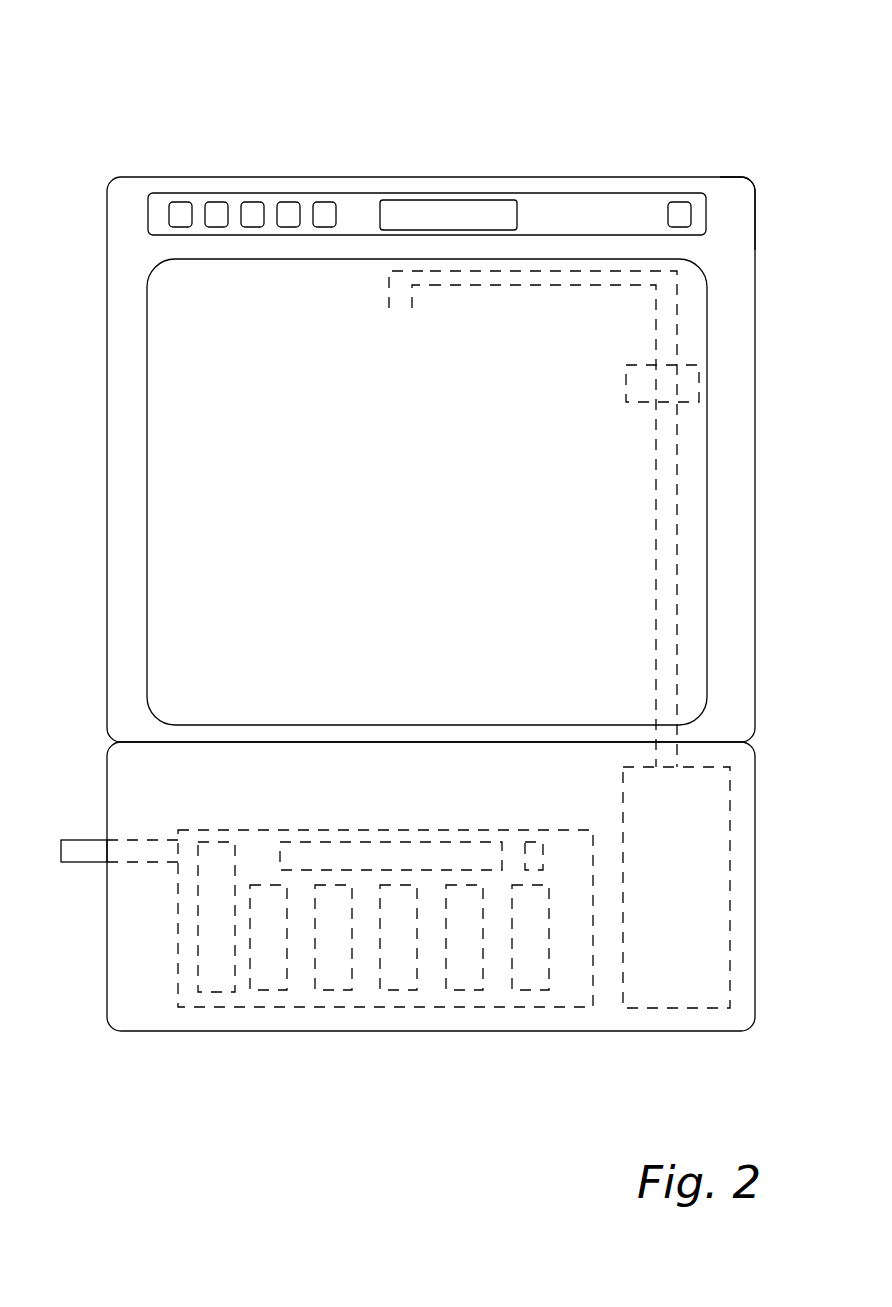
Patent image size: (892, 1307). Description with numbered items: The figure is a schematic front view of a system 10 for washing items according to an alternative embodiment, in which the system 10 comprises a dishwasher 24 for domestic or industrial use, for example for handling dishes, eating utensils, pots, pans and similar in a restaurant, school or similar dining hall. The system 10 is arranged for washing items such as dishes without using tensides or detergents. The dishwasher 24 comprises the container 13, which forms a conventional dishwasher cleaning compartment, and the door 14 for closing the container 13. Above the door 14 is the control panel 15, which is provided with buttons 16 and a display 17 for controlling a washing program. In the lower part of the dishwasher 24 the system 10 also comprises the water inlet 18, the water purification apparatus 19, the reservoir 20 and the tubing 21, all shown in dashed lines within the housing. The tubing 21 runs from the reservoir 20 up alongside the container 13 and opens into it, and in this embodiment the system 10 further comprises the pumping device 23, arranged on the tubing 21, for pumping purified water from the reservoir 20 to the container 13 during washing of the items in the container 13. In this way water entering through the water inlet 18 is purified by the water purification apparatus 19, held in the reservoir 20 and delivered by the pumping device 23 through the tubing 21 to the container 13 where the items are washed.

The system 10 is at (420, 46).
The container 13 is at (362, 292).
The door 14 is at (172, 298).
The control panel 15 is at (648, 200).
The buttons 16 is at (213, 215).
The display 17 is at (470, 210).
The water inlet 18 is at (85, 865).
The water purification apparatus 19 is at (190, 1000).
The reservoir 20 is at (657, 1000).
The tubing 21 is at (670, 428).
The pumping device 23 is at (690, 388).
The dishwasher 24 is at (730, 190).